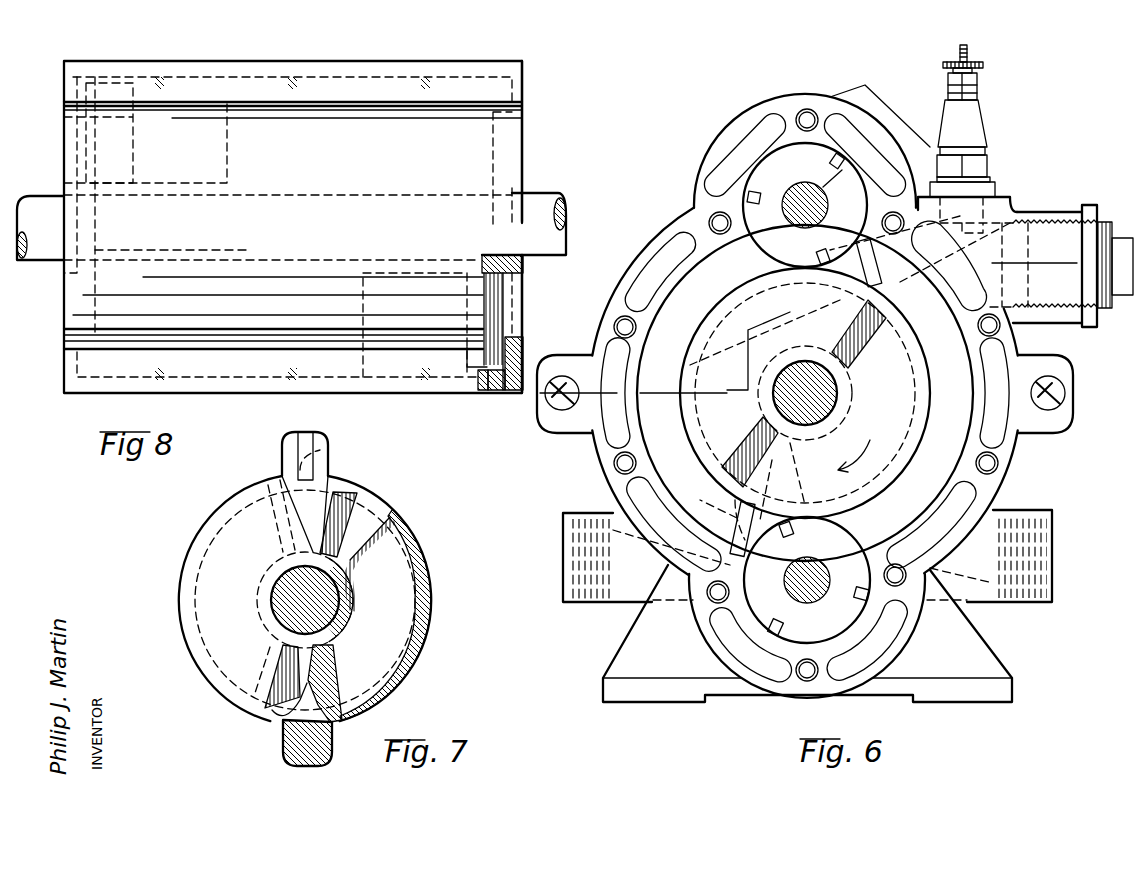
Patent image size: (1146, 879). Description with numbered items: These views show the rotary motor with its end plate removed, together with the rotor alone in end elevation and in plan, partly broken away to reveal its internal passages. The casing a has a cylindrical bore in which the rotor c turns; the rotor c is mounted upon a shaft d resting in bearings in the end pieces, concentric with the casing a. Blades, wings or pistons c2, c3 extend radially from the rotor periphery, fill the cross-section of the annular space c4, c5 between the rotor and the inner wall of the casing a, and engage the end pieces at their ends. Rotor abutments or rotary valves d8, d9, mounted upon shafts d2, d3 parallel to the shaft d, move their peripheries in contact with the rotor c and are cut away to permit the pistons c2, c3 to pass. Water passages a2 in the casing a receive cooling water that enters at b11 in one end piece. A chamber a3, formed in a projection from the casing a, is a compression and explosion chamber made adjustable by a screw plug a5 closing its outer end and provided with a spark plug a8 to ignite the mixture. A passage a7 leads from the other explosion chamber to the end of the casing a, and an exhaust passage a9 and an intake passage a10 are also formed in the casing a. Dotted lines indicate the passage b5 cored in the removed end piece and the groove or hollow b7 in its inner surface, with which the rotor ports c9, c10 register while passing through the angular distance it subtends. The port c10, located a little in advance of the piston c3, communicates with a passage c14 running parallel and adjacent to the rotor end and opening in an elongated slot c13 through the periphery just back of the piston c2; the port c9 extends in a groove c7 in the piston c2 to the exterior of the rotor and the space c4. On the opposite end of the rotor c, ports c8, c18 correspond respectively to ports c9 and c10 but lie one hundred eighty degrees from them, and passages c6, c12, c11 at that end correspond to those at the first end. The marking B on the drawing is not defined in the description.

In FIG. 6, the casing a is at (612, 487).
In FIG. 6, the water passages a2 is at (650, 271).
In FIG. 6, the explosion chamber a3 is at (990, 250).
In FIG. 6, the screw plug a5 is at (1100, 222).
In FIG. 6, the passage a7 is at (958, 283).
In FIG. 6, the spark plug a8 is at (981, 165).
In FIG. 6, the exhaust passage a9 is at (1045, 557).
In FIG. 6, the intake passage a10 is at (563, 588).
In FIG. 6, the passage b5 is at (839, 334).
In FIG. 6, the groove b7 is at (692, 366).
In FIG. 6, the water inlet b11 is at (893, 113).
In FIG. 8, the center line / outlet B is at (502, 405).
In FIG. 6, the center line / outlet B is at (808, 319).
In FIG. 8, the rotor c is at (293, 227).
In FIG. 7, the rotor c is at (208, 528).
In FIG. 6, the rotor c is at (723, 301).
In FIG. 8, the piston c2 is at (268, 373).
In FIG. 7, the piston c2 is at (333, 747).
In FIG. 6, the piston c2 is at (741, 556).
In FIG. 8, the piston c3 is at (340, 86).
In FIG. 7, the piston c3 is at (327, 458).
In FIG. 6, the piston c3 is at (858, 240).
In FIG. 6, the annular space c4 is at (805, 393).
In FIG. 6, the annular space c5 is at (826, 393).
In FIG. 8, the passage c6 is at (104, 80).
In FIG. 7, the passage c6 is at (322, 472).
In FIG. 8, the groove c7 is at (483, 383).
In FIG. 7, the groove c7 is at (293, 728).
In FIG. 6, the groove c7 is at (730, 504).
In FIG. 8, the port c8 is at (77, 136).
In FIG. 8, the port c9 is at (516, 315).
In FIG. 7, the port c9 is at (280, 668).
In FIG. 6, the port c9 is at (750, 447).
In FIG. 8, the port c10 is at (523, 151).
In FIG. 7, the port c10 is at (360, 512).
In FIG. 6, the port c10 is at (877, 334).
In FIG. 8, the passage c11 is at (225, 160).
In FIG. 7, the passage c11 is at (278, 478).
In FIG. 8, the passage c12 is at (96, 251).
In FIG. 7, the passage c12 is at (197, 572).
In FIG. 8, the elongated slot c13 is at (408, 352).
In FIG. 7, the elongated slot c13 is at (385, 713).
In FIG. 6, the elongated slot c13 is at (792, 478).
In FIG. 8, the passage c14 is at (493, 218).
In FIG. 7, the passage c14 is at (401, 568).
In FIG. 6, the passage c14 is at (900, 470).
In FIG. 8, the port c18 is at (72, 297).
In FIG. 8, the shaft d is at (52, 197).
In FIG. 7, the shaft d is at (286, 606).
In FIG. 6, the shaft d is at (840, 393).
In FIG. 6, the valve shaft d2 is at (822, 562).
In FIG. 6, the valve shaft d3 is at (792, 204).
In FIG. 6, the rotary valve d8 is at (810, 594).
In FIG. 6, the rotary valve d9 is at (810, 192).